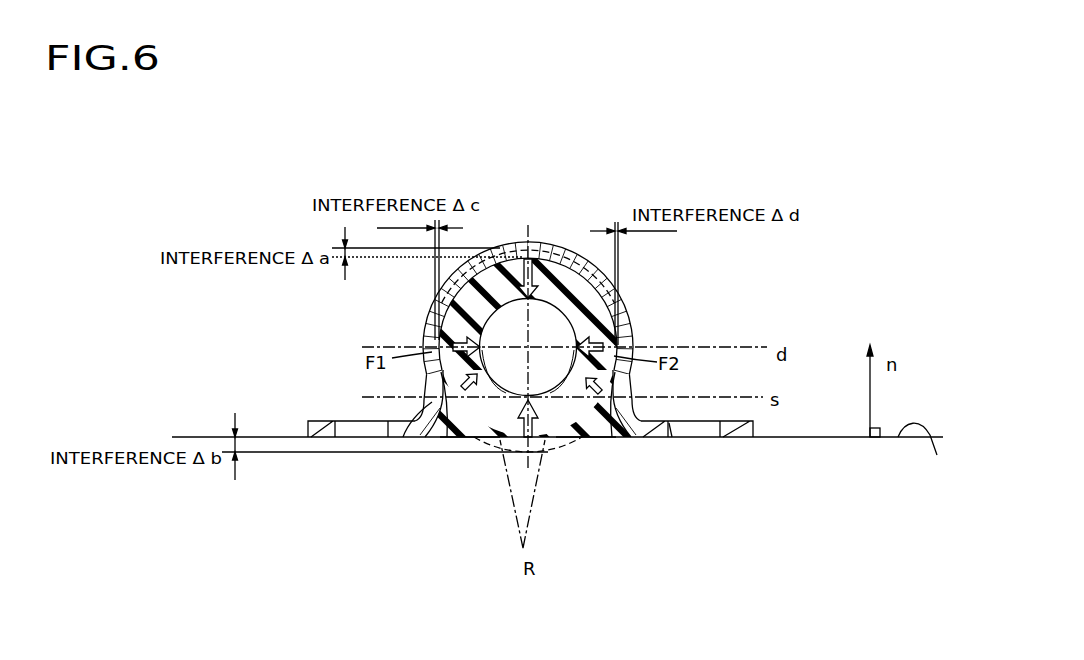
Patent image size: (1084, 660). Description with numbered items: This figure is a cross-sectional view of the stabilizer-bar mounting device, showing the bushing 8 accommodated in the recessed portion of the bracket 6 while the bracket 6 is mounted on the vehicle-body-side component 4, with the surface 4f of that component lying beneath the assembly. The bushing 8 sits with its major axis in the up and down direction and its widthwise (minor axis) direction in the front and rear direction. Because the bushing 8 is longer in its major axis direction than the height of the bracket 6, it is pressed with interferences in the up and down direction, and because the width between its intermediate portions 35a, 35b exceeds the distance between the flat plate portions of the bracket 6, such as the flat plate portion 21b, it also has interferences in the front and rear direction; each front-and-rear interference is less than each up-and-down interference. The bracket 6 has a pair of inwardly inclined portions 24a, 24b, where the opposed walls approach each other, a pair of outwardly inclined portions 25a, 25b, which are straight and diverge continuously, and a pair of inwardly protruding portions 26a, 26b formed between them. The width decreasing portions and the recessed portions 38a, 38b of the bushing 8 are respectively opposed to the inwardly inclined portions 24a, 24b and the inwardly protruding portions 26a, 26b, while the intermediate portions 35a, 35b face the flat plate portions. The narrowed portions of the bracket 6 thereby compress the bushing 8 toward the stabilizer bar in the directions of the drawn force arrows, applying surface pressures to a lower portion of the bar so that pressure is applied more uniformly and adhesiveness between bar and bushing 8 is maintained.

The bushing 8 is at (515, 263).
The intermediate portion 35a is at (483, 247).
The intermediate portion 35b is at (571, 247).
The bracket 6 is at (630, 284).
The flat plate portion 21b is at (620, 337).
The vehicle-body-side component 4 is at (835, 452).
The plate surface portion 4f is at (926, 456).
The inwardly inclined portion 24a is at (420, 396).
The inwardly inclined portion 24b is at (624, 394).
The inwardly protruding portion 26a is at (403, 437).
The inwardly protruding portion 26b is at (672, 437).
The outwardly inclined portion 25a is at (447, 437).
The outwardly inclined portion 25b is at (612, 437).
The recessed portion 38a is at (477, 437).
The recessed portion 38b is at (584, 437).